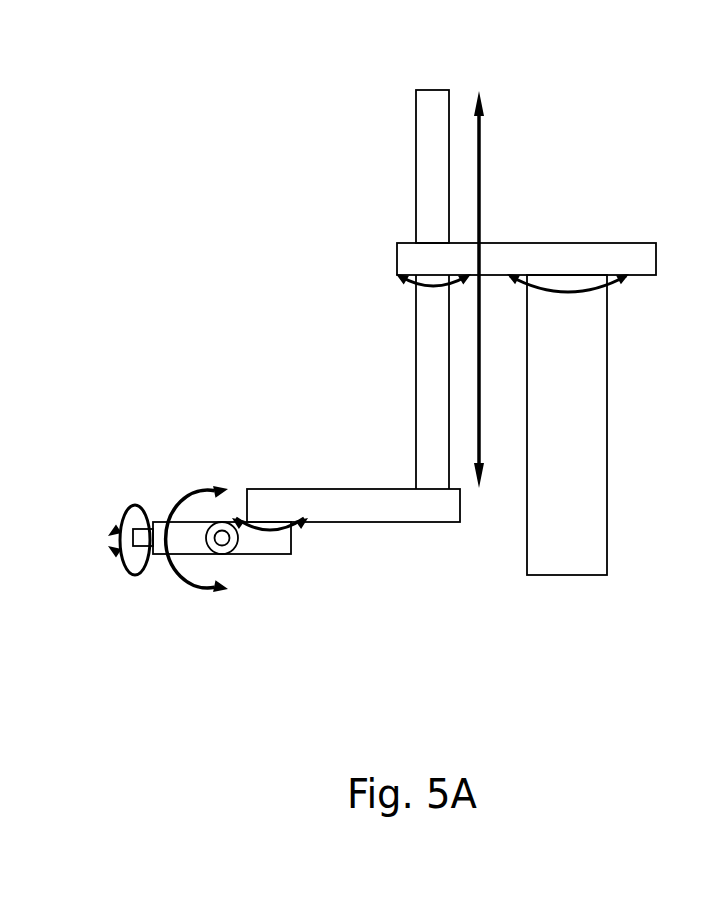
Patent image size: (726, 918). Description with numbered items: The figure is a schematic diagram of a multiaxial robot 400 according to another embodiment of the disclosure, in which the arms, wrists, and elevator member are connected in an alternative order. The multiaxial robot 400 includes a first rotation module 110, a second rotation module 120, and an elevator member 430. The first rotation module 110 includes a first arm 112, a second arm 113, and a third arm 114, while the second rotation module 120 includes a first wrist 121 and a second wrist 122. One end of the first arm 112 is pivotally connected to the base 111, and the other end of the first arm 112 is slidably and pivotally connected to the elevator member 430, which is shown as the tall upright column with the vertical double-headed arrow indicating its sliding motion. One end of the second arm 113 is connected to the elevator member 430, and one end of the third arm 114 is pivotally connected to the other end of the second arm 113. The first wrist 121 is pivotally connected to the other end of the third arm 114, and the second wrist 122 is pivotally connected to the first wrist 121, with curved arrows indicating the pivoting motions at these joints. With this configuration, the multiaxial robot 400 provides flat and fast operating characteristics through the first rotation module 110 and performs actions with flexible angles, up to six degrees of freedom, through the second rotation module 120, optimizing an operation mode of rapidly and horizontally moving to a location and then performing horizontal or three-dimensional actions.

The multiaxial robot 400 is at (135, 53).
The elevator member 430 is at (430, 177).
The first rotation module 110 is at (523, 660).
The base 111 is at (545, 536).
The first arm 112 is at (497, 262).
The second arm 113 is at (378, 507).
The third arm 114 is at (273, 543).
The second rotation module 120 is at (222, 422).
The first wrist 121 is at (168, 530).
The second wrist 122 is at (143, 535).